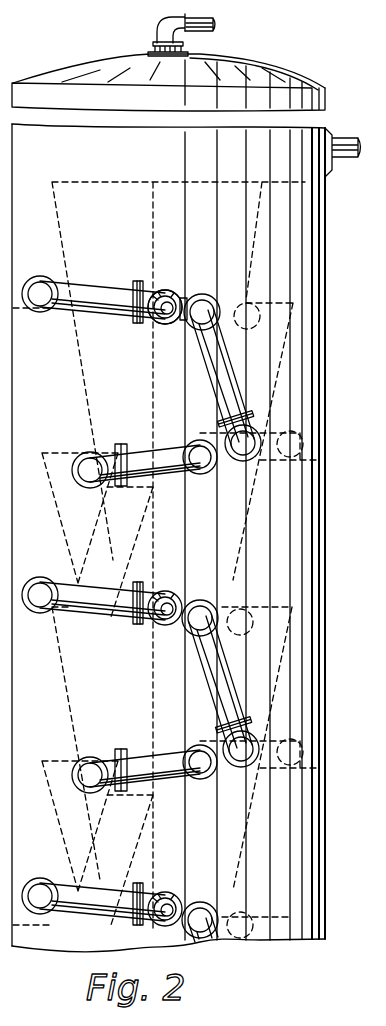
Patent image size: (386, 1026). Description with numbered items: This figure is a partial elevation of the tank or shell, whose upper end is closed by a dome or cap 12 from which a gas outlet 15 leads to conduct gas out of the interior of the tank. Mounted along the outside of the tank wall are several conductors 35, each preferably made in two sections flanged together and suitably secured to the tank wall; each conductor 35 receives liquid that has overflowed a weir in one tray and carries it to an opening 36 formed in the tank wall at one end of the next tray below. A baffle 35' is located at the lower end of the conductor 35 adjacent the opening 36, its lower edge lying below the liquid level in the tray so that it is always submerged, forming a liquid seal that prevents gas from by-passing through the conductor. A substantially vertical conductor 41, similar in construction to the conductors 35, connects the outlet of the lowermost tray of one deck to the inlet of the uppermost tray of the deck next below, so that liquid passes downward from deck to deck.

The dome or cap 12 is at (100, 62).
The gas outlet 15 is at (212, 37).
The conductor 35 is at (119, 601).
The baffle 35' is at (167, 285).
The opening 36 is at (184, 300).
The substantially vertical conductor 41 is at (213, 374).